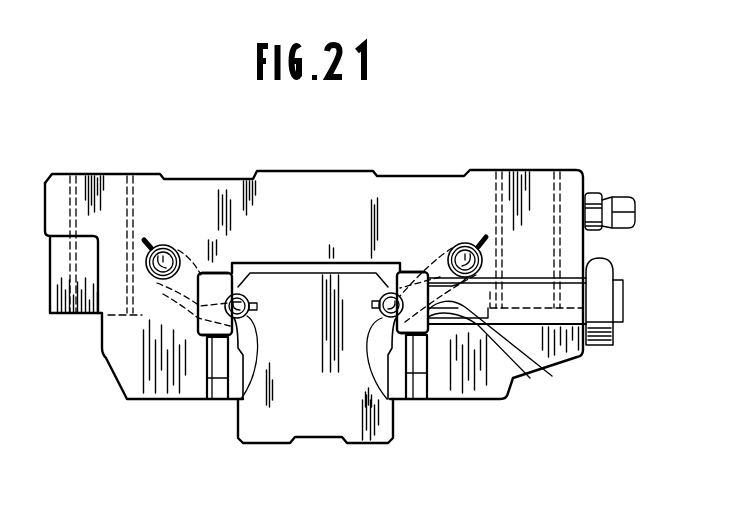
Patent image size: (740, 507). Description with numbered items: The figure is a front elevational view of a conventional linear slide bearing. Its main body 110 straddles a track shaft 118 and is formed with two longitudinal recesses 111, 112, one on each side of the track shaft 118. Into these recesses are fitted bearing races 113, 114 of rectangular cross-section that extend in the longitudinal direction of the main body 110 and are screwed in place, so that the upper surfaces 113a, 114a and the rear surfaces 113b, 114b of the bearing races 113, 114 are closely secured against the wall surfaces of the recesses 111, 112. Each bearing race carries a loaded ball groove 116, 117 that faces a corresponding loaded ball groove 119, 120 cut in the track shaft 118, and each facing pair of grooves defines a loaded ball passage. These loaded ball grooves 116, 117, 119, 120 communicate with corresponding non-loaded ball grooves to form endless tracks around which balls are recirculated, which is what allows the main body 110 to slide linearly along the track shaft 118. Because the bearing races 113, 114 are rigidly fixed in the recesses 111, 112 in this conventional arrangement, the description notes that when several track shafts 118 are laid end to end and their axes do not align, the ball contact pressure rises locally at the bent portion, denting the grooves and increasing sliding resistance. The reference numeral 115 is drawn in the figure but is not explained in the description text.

The main body 110 is at (377, 171).
The longitudinal recess 111 is at (212, 272).
The longitudinal recess 112 is at (424, 271).
The bearing race 113 is at (199, 321).
The upper surface 113a is at (222, 272).
The rear surface 113b is at (198, 337).
The bearing race 114 is at (433, 333).
The upper surface 114a is at (409, 270).
The rear surface 114b is at (552, 376).
The balls 115 is at (213, 367).
The loaded ball groove 116 is at (228, 304).
The loaded ball groove 117 is at (580, 357).
The track shaft 118 is at (318, 432).
The loaded ball groove 119 is at (240, 399).
The loaded ball groove 120 is at (393, 400).